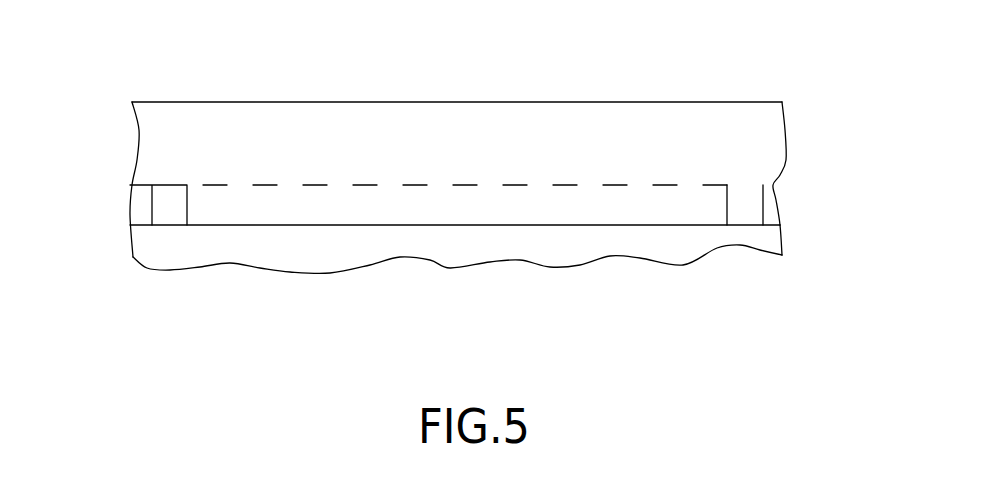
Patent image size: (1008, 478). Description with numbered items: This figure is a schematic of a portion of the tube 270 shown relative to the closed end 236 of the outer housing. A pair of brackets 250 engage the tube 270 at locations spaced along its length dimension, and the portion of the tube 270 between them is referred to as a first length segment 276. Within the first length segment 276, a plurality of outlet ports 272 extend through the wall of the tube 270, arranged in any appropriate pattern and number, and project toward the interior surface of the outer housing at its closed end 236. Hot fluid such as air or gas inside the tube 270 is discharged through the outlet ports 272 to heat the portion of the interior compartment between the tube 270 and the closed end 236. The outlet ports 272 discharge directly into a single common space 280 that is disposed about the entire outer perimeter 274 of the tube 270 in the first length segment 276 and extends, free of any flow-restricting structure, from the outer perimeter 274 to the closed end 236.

The closed end 236 is at (583, 102).
The common space 280 is at (415, 145).
The outlet ports 272 is at (343, 185).
The brackets 250 is at (165, 203).
The first length segment 276 is at (440, 253).
The outer perimeter 274 is at (327, 225).
The tube 270 is at (772, 210).